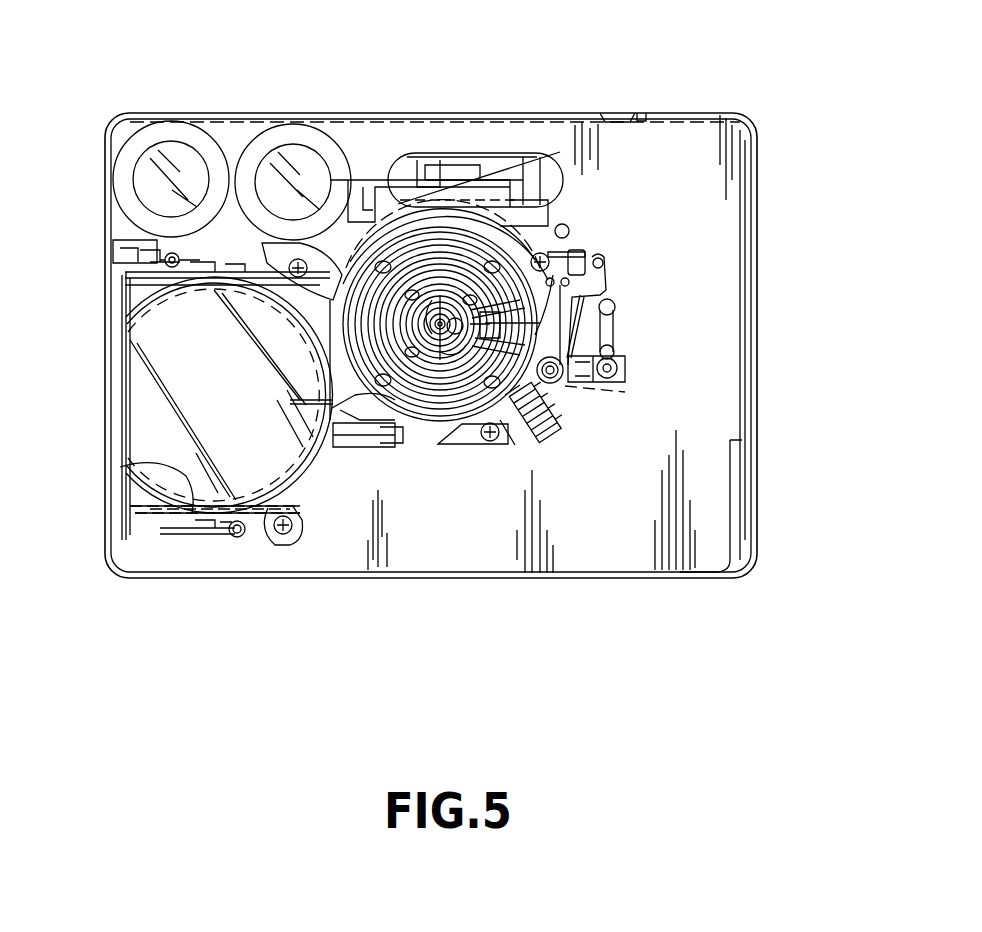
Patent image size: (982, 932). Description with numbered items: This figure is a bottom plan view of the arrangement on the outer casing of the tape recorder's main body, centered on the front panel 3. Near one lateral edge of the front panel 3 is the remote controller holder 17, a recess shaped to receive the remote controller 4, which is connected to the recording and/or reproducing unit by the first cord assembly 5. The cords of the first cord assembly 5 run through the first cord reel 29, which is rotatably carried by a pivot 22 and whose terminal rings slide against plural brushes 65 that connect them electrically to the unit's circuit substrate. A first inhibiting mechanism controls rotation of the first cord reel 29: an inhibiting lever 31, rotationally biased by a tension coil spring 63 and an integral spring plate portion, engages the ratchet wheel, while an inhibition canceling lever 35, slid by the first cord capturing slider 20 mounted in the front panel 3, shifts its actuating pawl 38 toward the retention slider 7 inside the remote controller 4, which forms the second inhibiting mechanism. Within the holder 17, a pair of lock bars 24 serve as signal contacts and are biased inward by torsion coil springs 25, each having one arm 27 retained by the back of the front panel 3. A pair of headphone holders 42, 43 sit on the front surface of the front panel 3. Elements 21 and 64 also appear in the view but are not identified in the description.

The front panel 3 is at (638, 148).
The remote controller 4 is at (165, 365).
The first cord assembly 5 is at (365, 447).
The retention slider 7 is at (333, 293).
The remote controller holder 17 is at (170, 463).
The first cord capturing slider 20 is at (562, 150).
The spool 21 is at (380, 420).
The pivot 22 is at (440, 345).
The lock bars 24 is at (177, 262).
The torsion coil springs 25 is at (172, 253).
The arm 27 is at (213, 262).
The first cord reel 29 is at (482, 340).
The inhibiting lever 31 is at (600, 283).
The inhibition canceling lever 35 is at (378, 200).
The actuating pawl 38 is at (297, 292).
The headphone holder 42 is at (288, 170).
The headphone holder 43 is at (148, 172).
The tension coil spring 63 is at (613, 322).
The stopper 64 is at (618, 366).
The brushes 65 is at (552, 390).